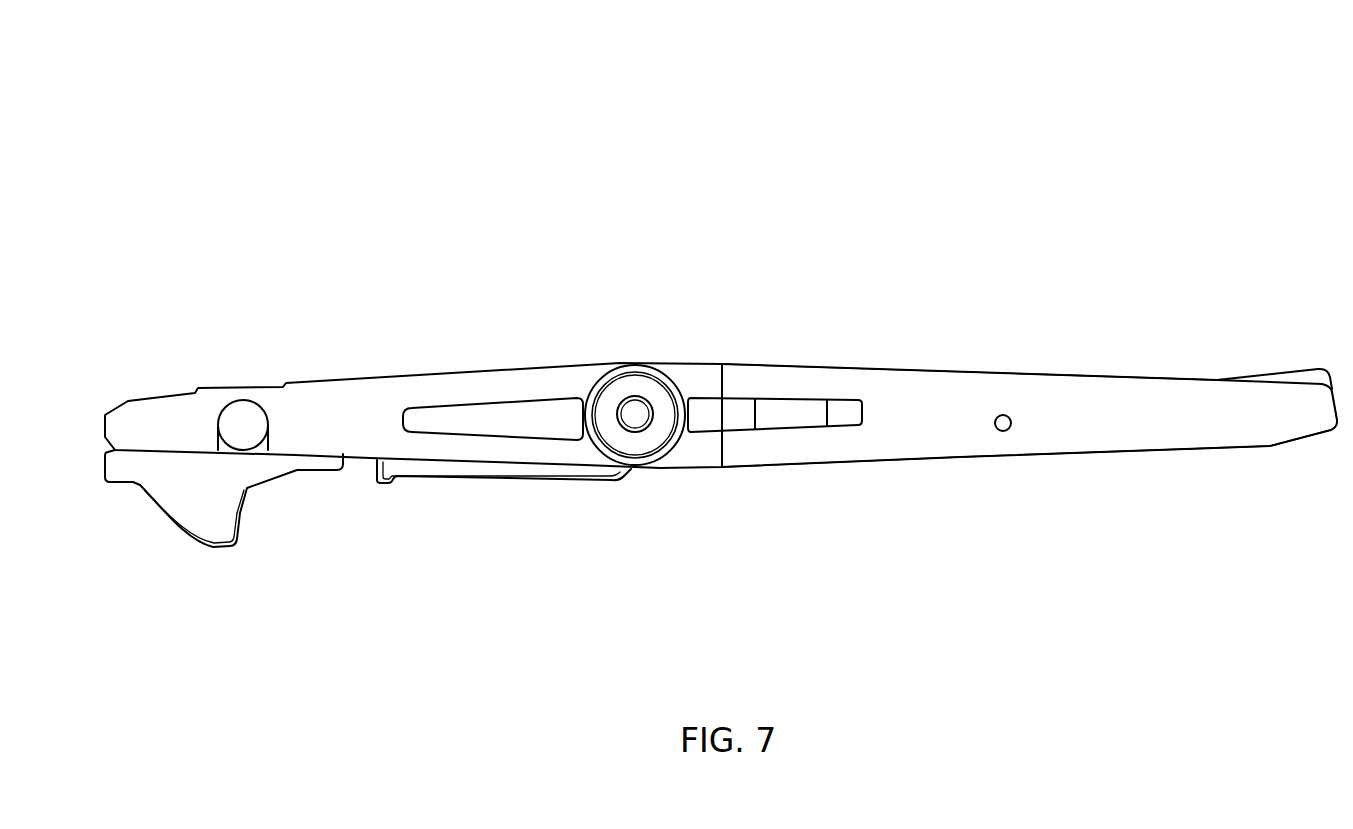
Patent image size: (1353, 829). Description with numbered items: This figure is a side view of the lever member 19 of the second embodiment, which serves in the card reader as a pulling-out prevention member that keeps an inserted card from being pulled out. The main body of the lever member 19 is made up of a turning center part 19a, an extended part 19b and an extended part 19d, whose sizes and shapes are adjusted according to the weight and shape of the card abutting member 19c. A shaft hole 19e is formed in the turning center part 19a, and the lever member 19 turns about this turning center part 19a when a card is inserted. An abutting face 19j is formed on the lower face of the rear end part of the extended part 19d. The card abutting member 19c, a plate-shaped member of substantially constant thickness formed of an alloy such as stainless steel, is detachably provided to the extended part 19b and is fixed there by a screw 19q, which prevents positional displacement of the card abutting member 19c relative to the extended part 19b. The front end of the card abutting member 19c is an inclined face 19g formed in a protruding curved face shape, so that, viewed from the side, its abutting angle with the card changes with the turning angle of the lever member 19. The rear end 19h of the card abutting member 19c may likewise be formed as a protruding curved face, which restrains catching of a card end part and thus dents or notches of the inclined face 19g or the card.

The lever member 19 is at (1169, 177).
The turning center part 19a is at (628, 363).
The extended part 19b is at (402, 380).
The card abutting member 19c is at (223, 552).
The extended part 19d is at (1050, 373).
The shaft hole 19e is at (633, 418).
The inclined face 19g is at (165, 525).
The rear end 19h is at (243, 517).
The abutting face 19j is at (1312, 437).
The screw 19q is at (241, 418).